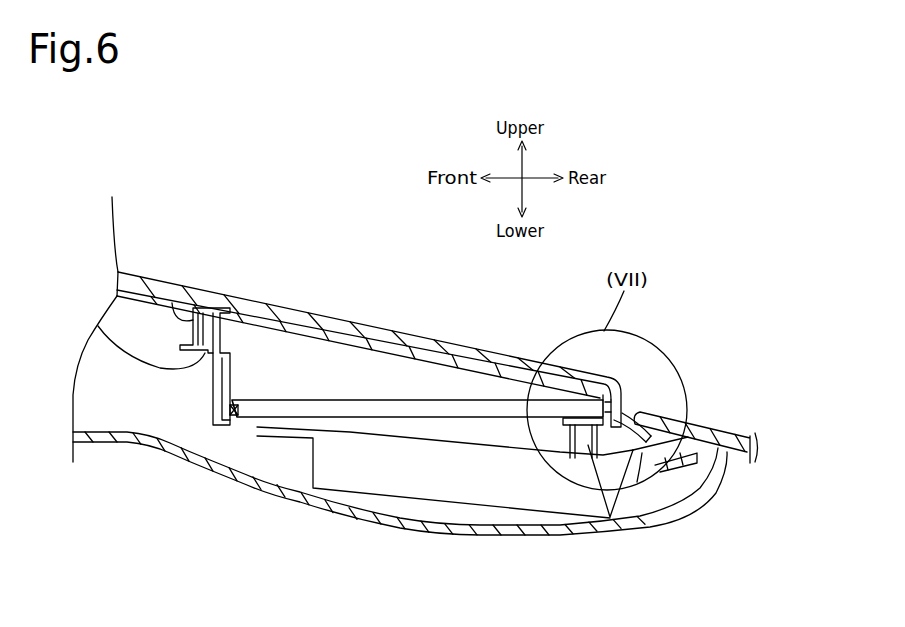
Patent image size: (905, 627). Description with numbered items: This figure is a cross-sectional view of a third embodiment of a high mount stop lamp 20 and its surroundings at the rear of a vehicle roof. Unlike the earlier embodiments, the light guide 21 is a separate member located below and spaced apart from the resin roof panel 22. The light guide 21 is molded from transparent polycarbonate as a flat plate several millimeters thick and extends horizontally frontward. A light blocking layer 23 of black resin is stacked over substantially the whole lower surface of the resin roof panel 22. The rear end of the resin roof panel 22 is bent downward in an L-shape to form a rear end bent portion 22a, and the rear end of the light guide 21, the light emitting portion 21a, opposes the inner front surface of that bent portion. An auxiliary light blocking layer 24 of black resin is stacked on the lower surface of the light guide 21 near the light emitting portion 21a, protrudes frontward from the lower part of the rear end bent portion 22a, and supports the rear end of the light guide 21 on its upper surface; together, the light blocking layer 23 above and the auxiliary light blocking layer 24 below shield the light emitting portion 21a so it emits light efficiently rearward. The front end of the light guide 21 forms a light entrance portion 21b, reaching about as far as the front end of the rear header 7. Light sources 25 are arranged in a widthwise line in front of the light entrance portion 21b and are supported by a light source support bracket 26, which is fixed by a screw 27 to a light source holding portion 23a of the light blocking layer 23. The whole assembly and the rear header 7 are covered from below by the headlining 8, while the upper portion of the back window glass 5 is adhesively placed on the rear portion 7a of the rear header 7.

The back window glass 5 is at (712, 427).
The rear header 7 is at (429, 506).
The rear portion of the rear header 7a is at (675, 445).
The headlining 8 is at (700, 498).
The high mount stop lamp 20 is at (343, 393).
The light guide 21 is at (430, 399).
The light emitting portion 21a is at (626, 406).
The light entrance portion 21b is at (233, 425).
The resin roof panel 22 is at (402, 340).
The rear end bent portion 22a is at (630, 413).
The light blocking layer 23 is at (305, 334).
The light source holding portion 23a is at (172, 302).
The auxiliary light blocking layer 24 is at (610, 517).
The light sources 25 is at (241, 400).
The light source support bracket 26 is at (213, 395).
The screw 27 is at (98, 326).